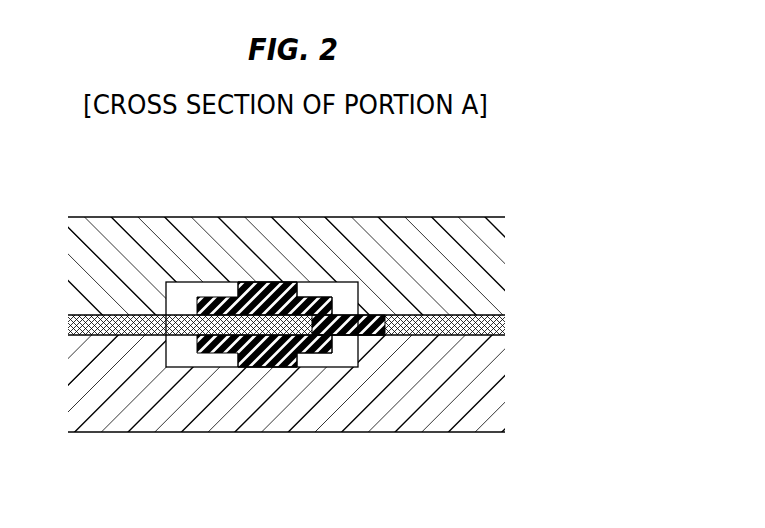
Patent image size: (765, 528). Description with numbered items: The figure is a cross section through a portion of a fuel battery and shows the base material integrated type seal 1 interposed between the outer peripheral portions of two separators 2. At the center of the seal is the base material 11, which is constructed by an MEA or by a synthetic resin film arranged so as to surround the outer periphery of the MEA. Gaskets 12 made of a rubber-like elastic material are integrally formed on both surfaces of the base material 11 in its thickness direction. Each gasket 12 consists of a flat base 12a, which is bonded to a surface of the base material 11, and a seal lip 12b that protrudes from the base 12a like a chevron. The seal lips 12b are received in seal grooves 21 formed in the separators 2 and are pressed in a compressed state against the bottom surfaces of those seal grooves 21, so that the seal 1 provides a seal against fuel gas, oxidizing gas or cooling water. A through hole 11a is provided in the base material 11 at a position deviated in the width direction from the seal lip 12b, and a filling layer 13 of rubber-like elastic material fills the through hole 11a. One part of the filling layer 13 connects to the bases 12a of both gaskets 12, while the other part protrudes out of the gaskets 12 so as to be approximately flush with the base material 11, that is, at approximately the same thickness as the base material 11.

The base material integrated type seal 1 is at (214, 291).
The separator 2 is at (452, 240).
The base material 11 is at (504, 325).
The through hole 11a is at (370, 343).
The gasket 12 is at (297, 282).
The base 12a is at (315, 297).
The seal lip 12b is at (292, 281).
The filling layer 13 is at (363, 318).
The seal groove 21 is at (167, 282).